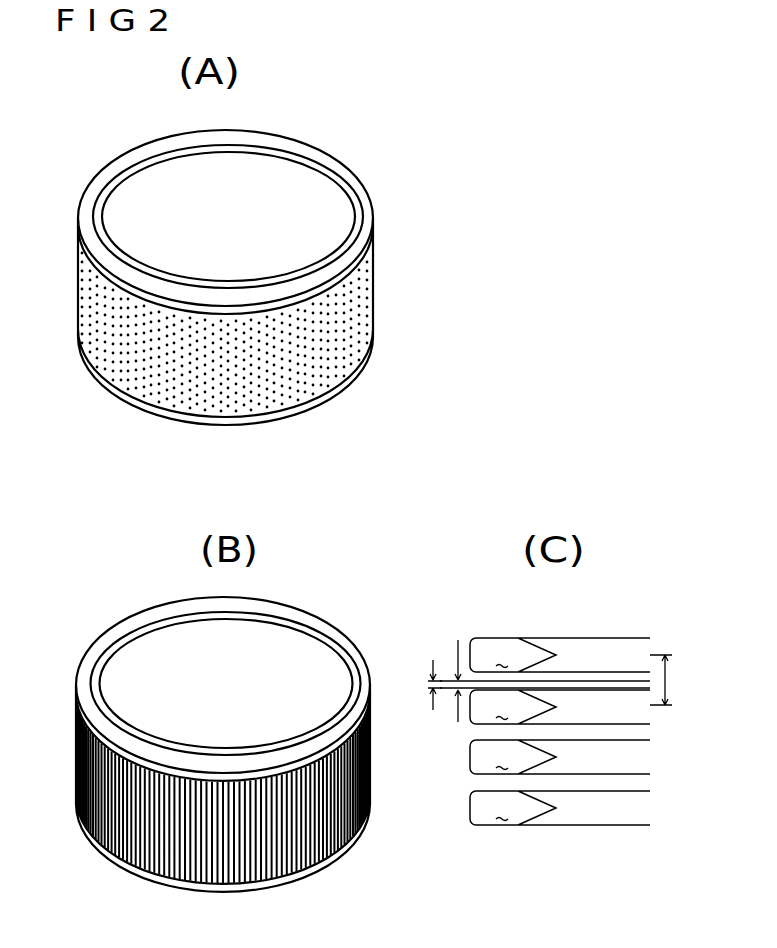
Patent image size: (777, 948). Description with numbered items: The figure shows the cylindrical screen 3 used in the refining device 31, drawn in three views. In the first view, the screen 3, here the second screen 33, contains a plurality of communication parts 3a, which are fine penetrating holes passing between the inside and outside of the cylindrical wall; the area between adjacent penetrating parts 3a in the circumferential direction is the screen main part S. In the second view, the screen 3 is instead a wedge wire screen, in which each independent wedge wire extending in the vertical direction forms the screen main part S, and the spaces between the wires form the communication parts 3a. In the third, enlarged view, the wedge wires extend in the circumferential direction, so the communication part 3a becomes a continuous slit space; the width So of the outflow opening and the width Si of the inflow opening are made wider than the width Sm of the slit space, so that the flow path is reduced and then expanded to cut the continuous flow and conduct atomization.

The refining device 31 is at (336, 142).
The second screen 33 is at (254, 565).
The cylindrical screen 3 is at (266, 575).
The communication part 3a is at (368, 294).
The screen main part S is at (363, 293).
The width of the outflow opening So is at (448, 647).
The width of the slit space Sm is at (440, 711).
The width of the inflow opening Si is at (675, 680).